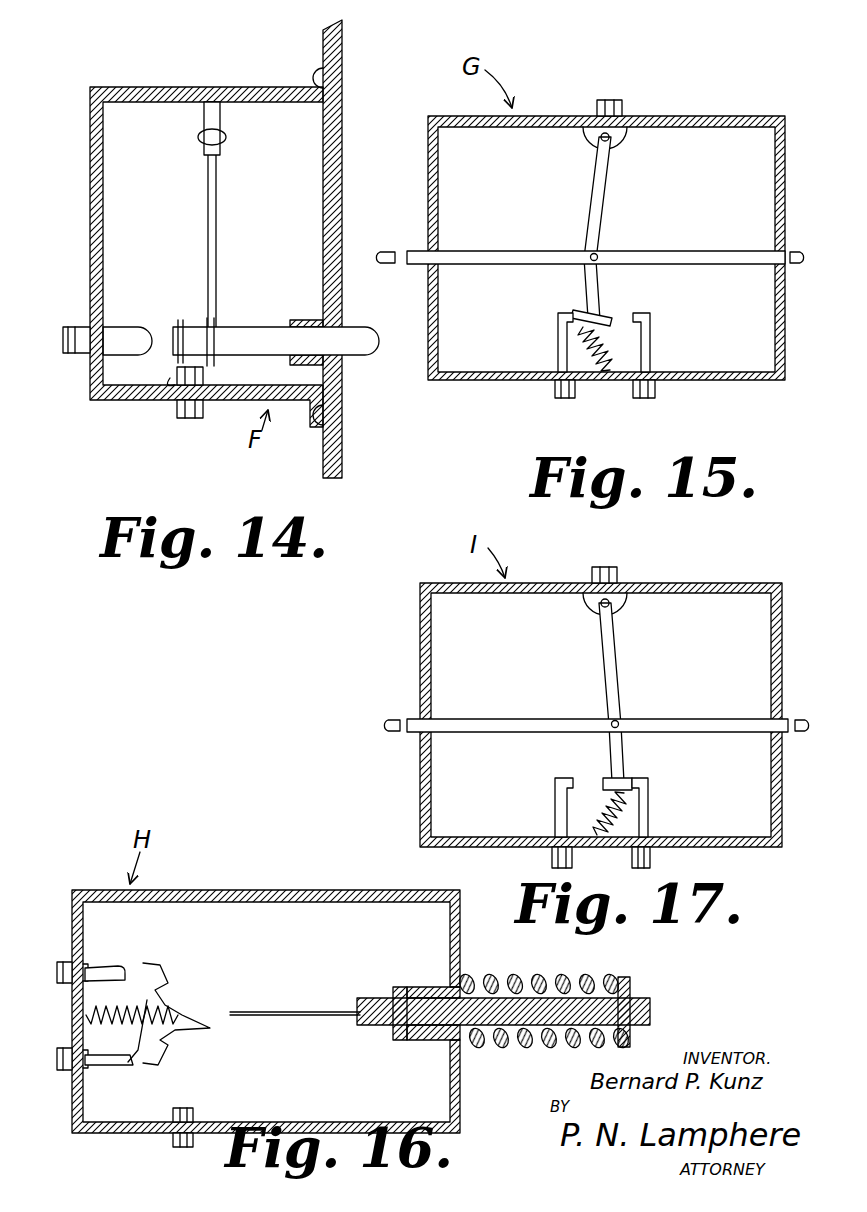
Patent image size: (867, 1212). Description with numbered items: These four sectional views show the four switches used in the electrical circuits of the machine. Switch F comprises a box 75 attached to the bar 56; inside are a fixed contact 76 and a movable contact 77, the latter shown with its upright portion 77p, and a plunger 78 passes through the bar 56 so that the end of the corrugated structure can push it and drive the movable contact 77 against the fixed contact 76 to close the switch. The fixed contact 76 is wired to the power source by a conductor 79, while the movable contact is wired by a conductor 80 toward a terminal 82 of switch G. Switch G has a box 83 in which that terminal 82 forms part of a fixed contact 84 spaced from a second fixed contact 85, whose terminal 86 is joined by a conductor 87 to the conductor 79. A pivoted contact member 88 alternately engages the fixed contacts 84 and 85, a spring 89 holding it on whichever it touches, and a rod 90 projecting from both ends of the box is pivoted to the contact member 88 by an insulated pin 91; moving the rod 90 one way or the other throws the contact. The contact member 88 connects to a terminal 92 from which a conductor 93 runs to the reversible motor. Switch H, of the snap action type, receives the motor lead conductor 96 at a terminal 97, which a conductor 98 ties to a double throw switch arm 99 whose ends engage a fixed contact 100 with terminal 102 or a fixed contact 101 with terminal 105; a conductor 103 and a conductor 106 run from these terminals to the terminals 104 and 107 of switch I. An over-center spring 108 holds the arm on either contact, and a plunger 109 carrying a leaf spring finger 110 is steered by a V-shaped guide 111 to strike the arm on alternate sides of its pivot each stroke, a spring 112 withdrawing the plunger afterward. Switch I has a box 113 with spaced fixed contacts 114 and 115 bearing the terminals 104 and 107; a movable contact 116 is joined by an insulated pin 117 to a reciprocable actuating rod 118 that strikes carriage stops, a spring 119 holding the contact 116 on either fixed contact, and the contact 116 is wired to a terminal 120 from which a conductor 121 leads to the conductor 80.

In FIG. 14, the bar 56 is at (335, 246).
In FIG. 14, the box 75 is at (100, 87).
In FIG. 14, the fixed contact 76 is at (85, 326).
In FIG. 14, the movable contact 77 is at (172, 332).
In FIG. 14, the vertical rod 77p is at (216, 280).
In FIG. 14, the plunger 78 is at (248, 336).
In FIG. 14, the conductor 79 is at (73, 357).
In FIG. 14, the conductor 80 is at (123, 483).
In FIG. 15, the conductor 80 is at (505, 438).
In FIG. 15, the terminal 82 is at (570, 399).
In FIG. 15, the box 83 is at (746, 120).
In FIG. 15, the fixed contact 84 is at (564, 358).
In FIG. 15, the fixed contact 85 is at (643, 346).
In FIG. 15, the terminal 86 is at (644, 399).
In FIG. 15, the conductor 87 is at (657, 388).
In FIG. 15, the pivoted contact member 88 is at (600, 218).
In FIG. 15, the spring 89 is at (604, 378).
In FIG. 15, the rod 90 is at (684, 258).
In FIG. 15, the insulated pin 91 is at (590, 252).
In FIG. 15, the terminal 92 is at (598, 104).
In FIG. 15, the conductor 93 is at (622, 110).
In FIG. 16, the conductor 96 is at (173, 1135).
In FIG. 16, the terminal 97 is at (183, 1147).
In FIG. 16, the conductor 98 is at (158, 1108).
In FIG. 16, the double throw switch arm 99 is at (140, 1004).
In FIG. 16, the fixed contact 100 is at (106, 968).
In FIG. 16, the fixed contact 101 is at (100, 1062).
In FIG. 16, the terminal 102 is at (56, 977).
In FIG. 17, the conductor 103 is at (525, 888).
In FIG. 16, the conductor 103 is at (62, 960).
In FIG. 17, the fixed terminal 104 is at (562, 868).
In FIG. 16, the terminal 105 is at (57, 1056).
In FIG. 17, the conductor 106 is at (652, 856).
In FIG. 16, the conductor 106 is at (63, 1070).
In FIG. 17, the terminal 107 is at (644, 868).
In FIG. 16, the over-center spring 108 is at (130, 1022).
In FIG. 16, the plunger 109 is at (372, 998).
In FIG. 16, the leaf spring finger 110 is at (278, 1010).
In FIG. 16, the V-shaped guide 111 is at (168, 1005).
In FIG. 16, the spring 112 is at (505, 978).
In FIG. 17, the box 113 is at (714, 590).
In FIG. 17, the fixed contact 114 is at (557, 812).
In FIG. 17, the fixed contact 115 is at (650, 802).
In FIG. 17, the movable contact 116 is at (608, 655).
In FIG. 17, the insulated pin 117 is at (610, 720).
In FIG. 17, the reciprocable actuating rod 118 is at (684, 720).
In FIG. 17, the spring 119 is at (604, 840).
In FIG. 17, the terminal 120 is at (592, 572).
In FIG. 17, the conductor 121 is at (620, 578).